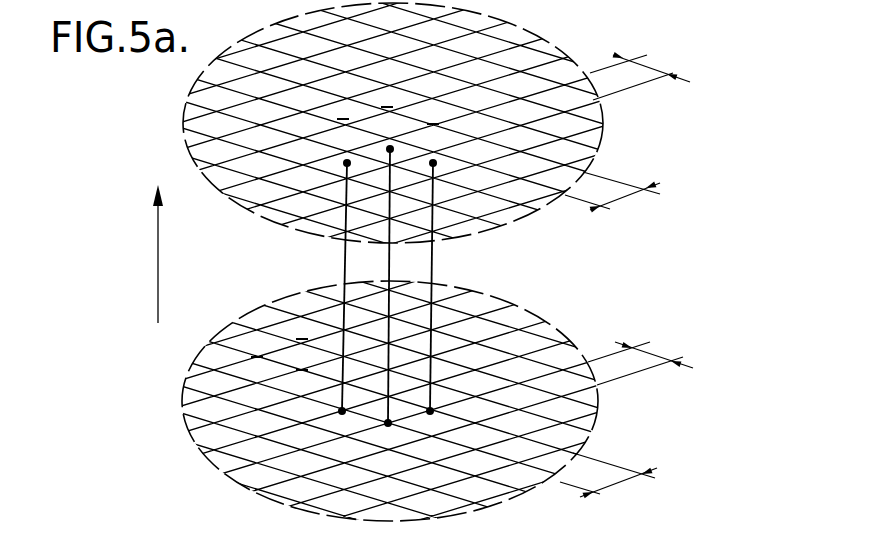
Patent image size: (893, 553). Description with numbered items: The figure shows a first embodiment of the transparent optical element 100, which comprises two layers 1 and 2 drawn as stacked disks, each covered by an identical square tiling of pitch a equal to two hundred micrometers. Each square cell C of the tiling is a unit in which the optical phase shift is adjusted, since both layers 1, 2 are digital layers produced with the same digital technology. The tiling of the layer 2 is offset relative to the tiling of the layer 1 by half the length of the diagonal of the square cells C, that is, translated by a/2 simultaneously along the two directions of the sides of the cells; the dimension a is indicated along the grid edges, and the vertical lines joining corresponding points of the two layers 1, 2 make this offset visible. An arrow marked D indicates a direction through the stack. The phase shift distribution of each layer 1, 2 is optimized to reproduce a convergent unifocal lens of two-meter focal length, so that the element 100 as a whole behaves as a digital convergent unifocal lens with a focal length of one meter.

The layer 1 is at (607, 148).
The layer 2 is at (445, 362).
The optical element 100 is at (484, 276).
The square cell C is at (345, 226).
The direction arrow D is at (144, 252).
The pitch a is at (626, 276).